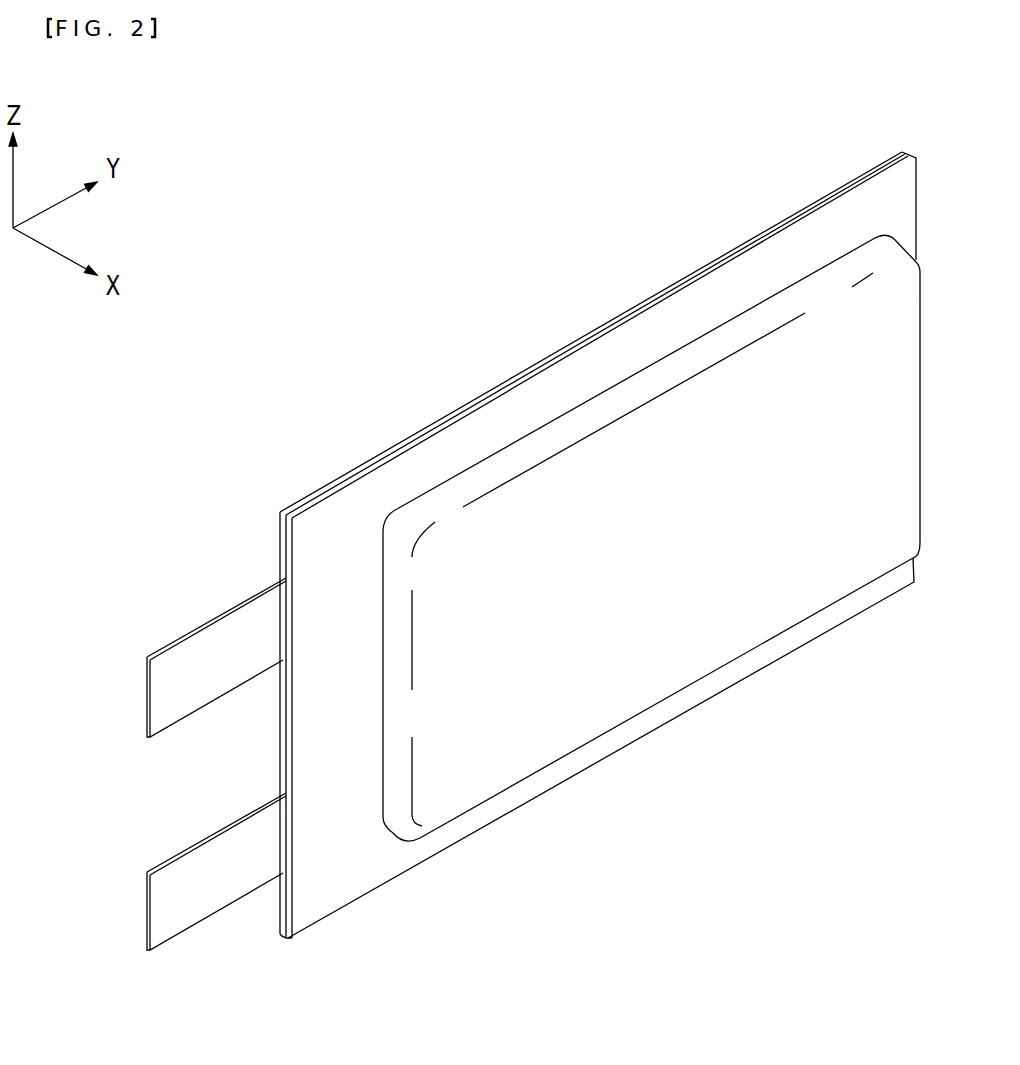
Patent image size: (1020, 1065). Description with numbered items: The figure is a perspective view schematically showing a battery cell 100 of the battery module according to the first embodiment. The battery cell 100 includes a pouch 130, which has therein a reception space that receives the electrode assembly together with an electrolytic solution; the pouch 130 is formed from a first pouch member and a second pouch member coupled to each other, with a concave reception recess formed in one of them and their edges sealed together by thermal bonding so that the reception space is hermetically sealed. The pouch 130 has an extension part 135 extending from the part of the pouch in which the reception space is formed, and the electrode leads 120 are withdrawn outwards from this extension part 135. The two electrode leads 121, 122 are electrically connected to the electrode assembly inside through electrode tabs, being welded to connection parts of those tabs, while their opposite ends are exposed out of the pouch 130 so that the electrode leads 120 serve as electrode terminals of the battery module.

The battery cell 100 is at (85, 391).
The electrode leads 120 is at (147, 764).
The electrode lead 121 is at (168, 705).
The electrode lead 122 is at (217, 870).
The pouch 130 is at (688, 330).
The extension part 135 is at (315, 892).